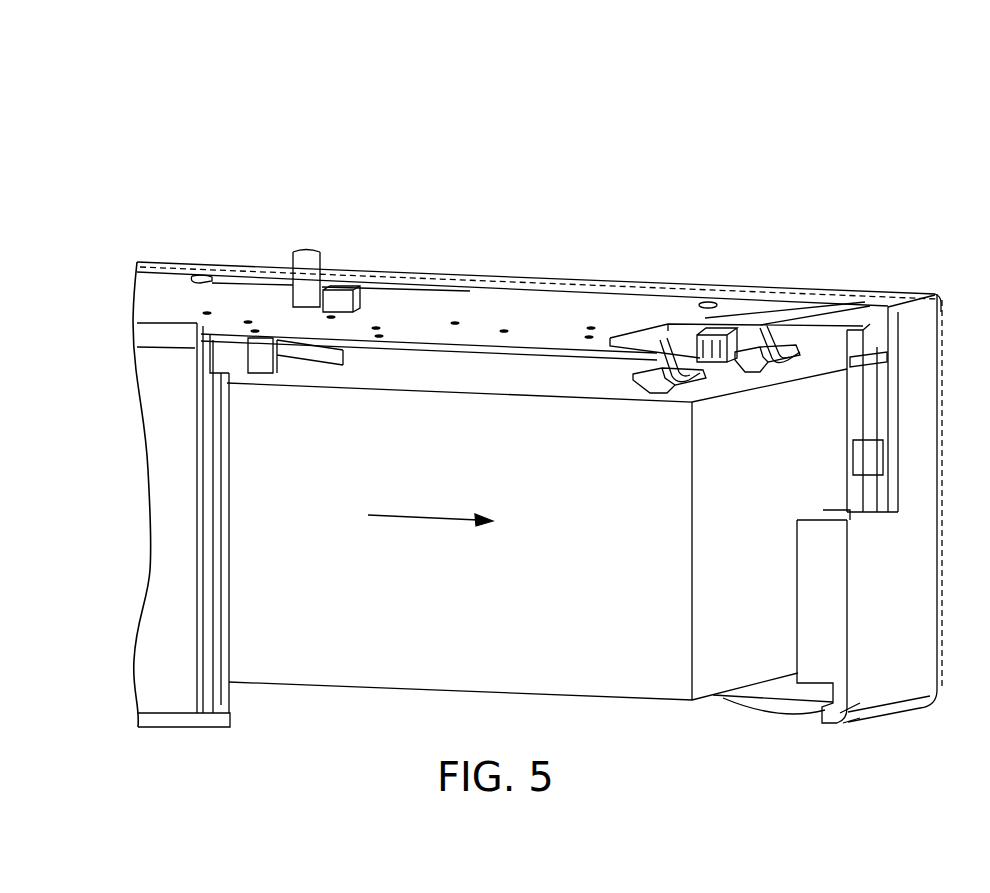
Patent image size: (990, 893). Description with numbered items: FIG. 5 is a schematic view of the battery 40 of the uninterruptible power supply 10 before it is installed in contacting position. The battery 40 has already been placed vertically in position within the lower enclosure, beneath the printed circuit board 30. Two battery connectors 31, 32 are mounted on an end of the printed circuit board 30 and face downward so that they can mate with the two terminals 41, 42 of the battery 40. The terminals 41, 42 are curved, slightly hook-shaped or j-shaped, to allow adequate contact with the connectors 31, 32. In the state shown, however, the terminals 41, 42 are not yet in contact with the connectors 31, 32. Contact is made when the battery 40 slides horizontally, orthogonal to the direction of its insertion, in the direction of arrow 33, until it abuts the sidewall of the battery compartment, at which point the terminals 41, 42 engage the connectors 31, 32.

The uninterruptible power supply 10 is at (203, 218).
The printed circuit board 30 is at (438, 298).
The battery connector 31 is at (782, 344).
The battery connector 32 is at (688, 356).
The arrow 33 is at (420, 516).
The battery 40 is at (409, 660).
The terminal 41 is at (783, 360).
The terminal 42 is at (706, 386).